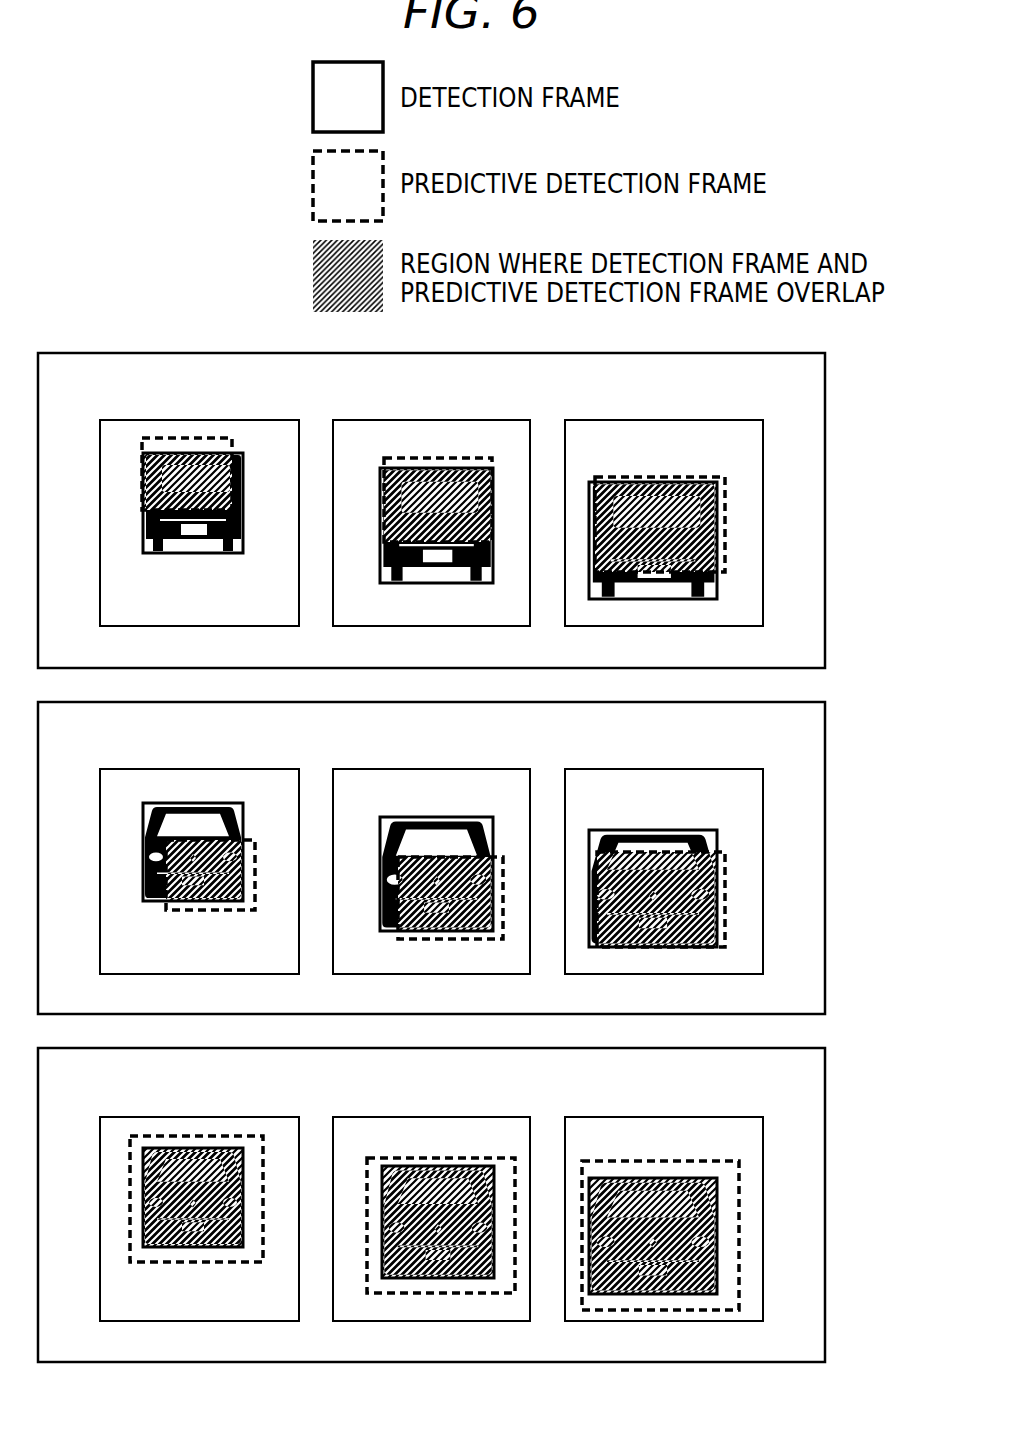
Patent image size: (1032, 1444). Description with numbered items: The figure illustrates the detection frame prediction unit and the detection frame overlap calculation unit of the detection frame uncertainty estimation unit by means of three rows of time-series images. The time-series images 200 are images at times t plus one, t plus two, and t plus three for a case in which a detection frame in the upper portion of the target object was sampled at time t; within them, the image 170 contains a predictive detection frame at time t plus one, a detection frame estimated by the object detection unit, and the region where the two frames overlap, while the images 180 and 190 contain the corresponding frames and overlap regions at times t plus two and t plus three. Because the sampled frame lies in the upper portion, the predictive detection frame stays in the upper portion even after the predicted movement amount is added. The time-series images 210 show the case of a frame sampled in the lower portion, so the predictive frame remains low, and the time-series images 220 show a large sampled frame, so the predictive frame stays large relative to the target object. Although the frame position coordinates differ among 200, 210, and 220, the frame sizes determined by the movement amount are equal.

The image at time t+1 170 is at (273, 420).
The image at time t+2 180 is at (502, 420).
The image at time t+3 190 is at (734, 420).
The time-series images 200 is at (825, 437).
The time-series images 210 is at (825, 785).
The time-series images 220 is at (825, 1133).